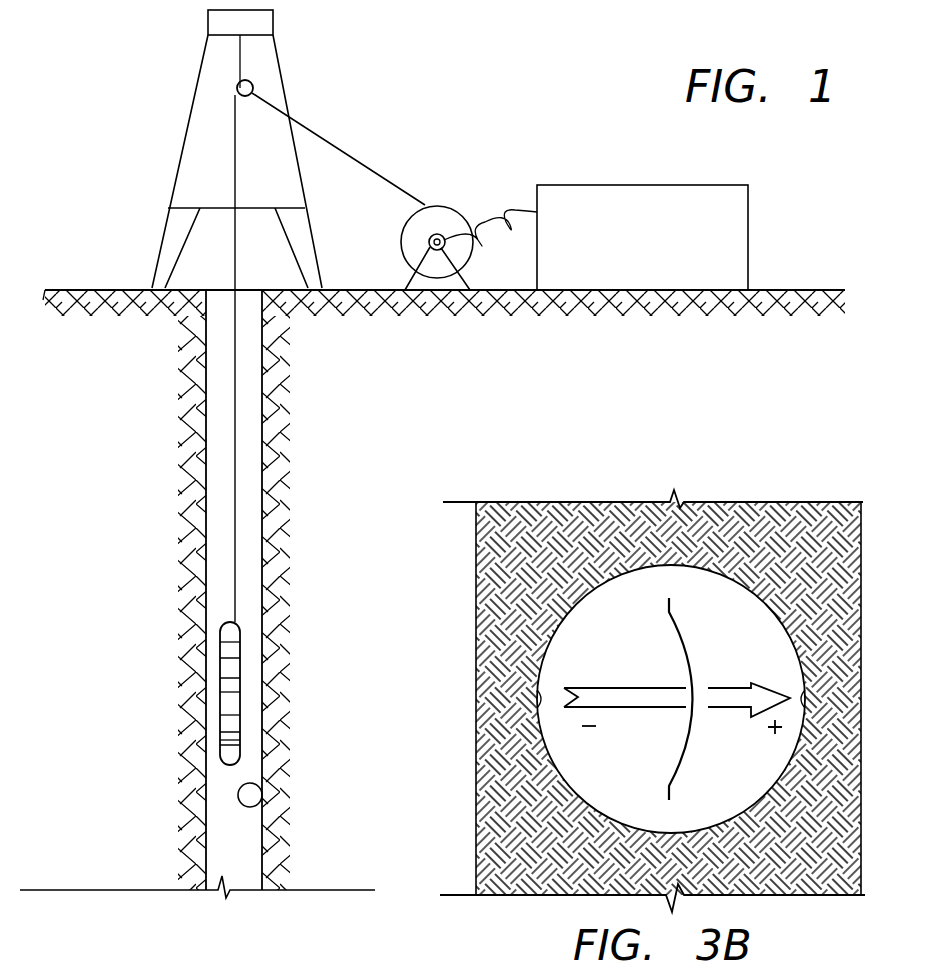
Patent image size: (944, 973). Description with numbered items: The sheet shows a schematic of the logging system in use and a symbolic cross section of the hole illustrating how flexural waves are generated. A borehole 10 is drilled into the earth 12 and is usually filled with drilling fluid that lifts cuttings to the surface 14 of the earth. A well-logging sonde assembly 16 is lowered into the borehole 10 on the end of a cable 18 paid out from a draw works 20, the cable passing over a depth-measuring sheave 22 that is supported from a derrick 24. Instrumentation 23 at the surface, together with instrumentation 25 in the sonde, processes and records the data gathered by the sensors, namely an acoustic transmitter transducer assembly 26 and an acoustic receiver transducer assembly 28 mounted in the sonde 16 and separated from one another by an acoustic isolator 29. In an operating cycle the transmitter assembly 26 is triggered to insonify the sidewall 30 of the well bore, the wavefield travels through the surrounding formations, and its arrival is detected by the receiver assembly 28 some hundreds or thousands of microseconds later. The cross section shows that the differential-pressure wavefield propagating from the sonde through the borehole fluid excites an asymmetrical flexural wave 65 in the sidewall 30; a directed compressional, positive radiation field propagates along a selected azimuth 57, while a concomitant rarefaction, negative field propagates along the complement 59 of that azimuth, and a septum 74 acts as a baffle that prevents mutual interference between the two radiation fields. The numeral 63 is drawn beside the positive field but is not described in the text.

In FIG. 1, the borehole 10 is at (243, 848).
In FIG. 3B, the borehole 10 is at (752, 765).
In FIG. 1, the earth 12 is at (137, 441).
In FIG. 3B, the earth 12 is at (572, 588).
In FIG. 1, the surface of the earth 14 is at (95, 288).
In FIG. 1, the well-logging sonde assembly 16 is at (212, 612).
In FIG. 1, the cable 18 is at (343, 140).
In FIG. 1, the draw works 20 is at (448, 206).
In FIG. 1, the depth-measuring sheave 22 is at (237, 84).
In FIG. 1, the instrumentation 23 is at (588, 185).
In FIG. 1, the derrick 24 is at (178, 160).
In FIG. 1, the instrumentation in the sonde 25 is at (228, 642).
In FIG. 1, the acoustic transmitter transducer assembly 26 is at (228, 741).
In FIG. 1, the acoustic receiver transducer assembly 28 is at (228, 691).
In FIG. 1, the acoustic isolator 29 is at (228, 716).
In FIG. 1, the sidewall 30 is at (256, 784).
In FIG. 3B, the sidewall 30 is at (604, 821).
In FIG. 3B, the selected azimuth 57 is at (734, 686).
In FIG. 3B, the complement of azimuth 59 is at (651, 684).
In FIG. 3B, the positive electrode 63 is at (813, 700).
In FIG. 3B, the asymmetrical flexural wave 65 is at (543, 681).
In FIG. 3B, the septum 74 is at (672, 599).